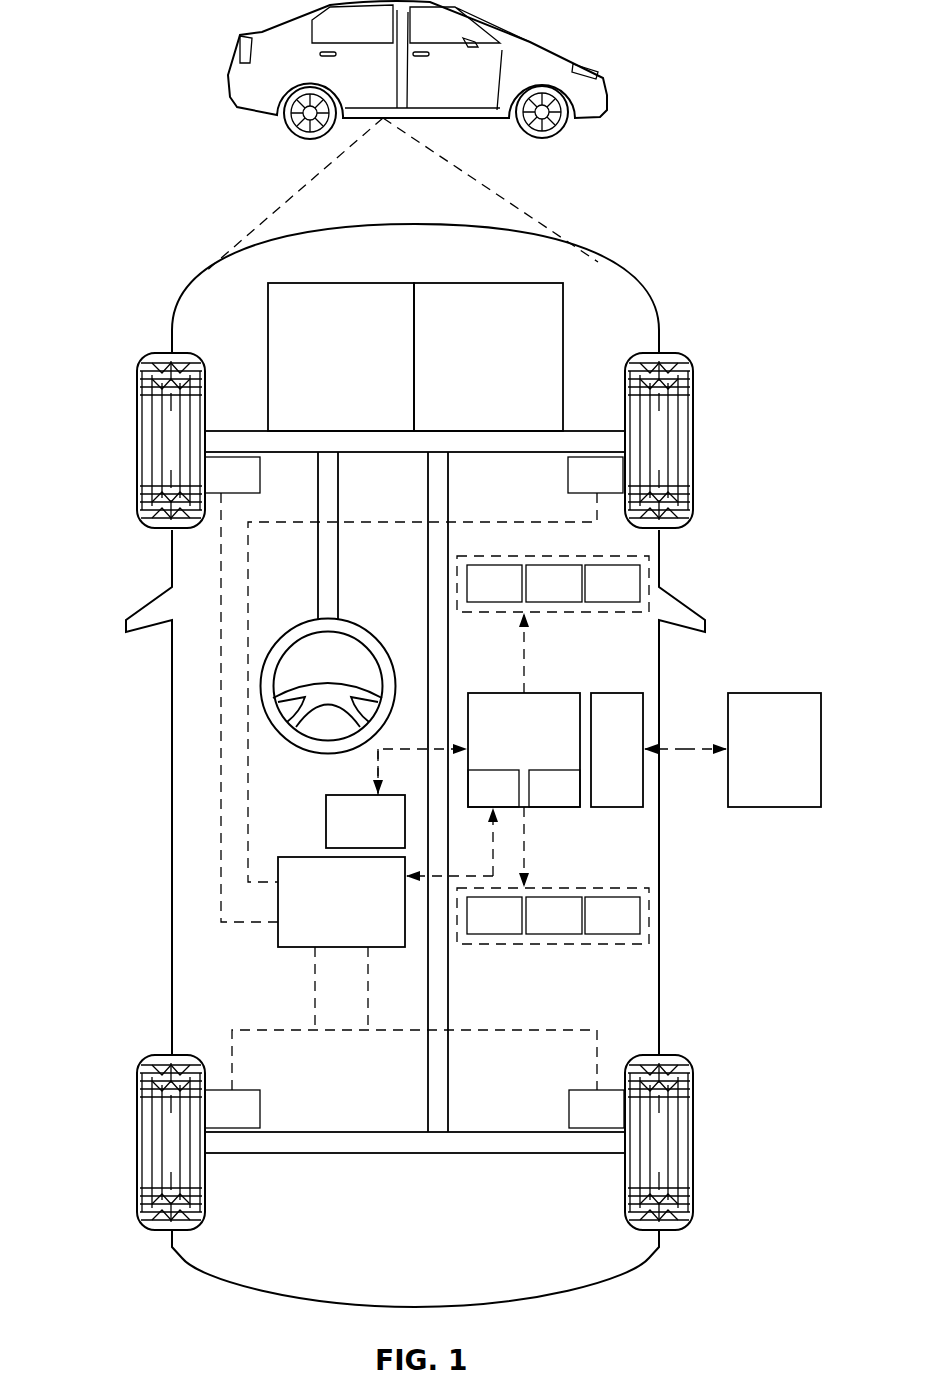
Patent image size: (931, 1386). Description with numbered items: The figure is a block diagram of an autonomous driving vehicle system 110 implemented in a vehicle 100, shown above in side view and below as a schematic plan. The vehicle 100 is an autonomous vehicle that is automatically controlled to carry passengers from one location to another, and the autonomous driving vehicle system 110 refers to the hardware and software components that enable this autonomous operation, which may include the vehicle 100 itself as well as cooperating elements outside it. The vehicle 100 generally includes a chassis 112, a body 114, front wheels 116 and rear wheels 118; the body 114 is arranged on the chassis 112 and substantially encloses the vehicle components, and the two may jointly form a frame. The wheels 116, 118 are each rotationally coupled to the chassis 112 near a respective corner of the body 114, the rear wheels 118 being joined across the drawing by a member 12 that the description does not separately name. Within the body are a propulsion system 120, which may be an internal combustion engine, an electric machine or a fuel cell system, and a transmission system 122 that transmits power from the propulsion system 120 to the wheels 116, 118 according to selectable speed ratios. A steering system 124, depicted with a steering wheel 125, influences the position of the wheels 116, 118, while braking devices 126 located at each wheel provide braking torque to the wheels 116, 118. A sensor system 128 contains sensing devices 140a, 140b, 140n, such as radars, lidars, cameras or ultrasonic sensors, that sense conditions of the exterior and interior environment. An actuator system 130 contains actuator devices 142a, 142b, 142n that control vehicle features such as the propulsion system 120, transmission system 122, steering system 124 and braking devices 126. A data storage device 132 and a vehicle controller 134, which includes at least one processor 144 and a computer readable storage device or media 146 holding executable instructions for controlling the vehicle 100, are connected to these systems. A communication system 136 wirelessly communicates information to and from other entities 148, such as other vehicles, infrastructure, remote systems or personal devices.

The vehicle 100 is at (235, 52).
The autonomous driving vehicle system 110 is at (439, 765).
The chassis 112 is at (428, 1097).
The body 114 is at (172, 853).
The front wheels 116 is at (137, 440).
The rear wheels 118 is at (137, 1140).
The rear axle 12 is at (525, 1152).
The propulsion system 120 is at (361, 372).
The transmission system 122 is at (509, 372).
The steering system 124 is at (347, 487).
The steering wheel 125 is at (312, 753).
The braking devices 126 is at (251, 489).
The sensor system 128 is at (553, 568).
The actuator system 130 is at (553, 935).
The data storage device 132 is at (385, 836).
The vehicle controller 134 is at (544, 747).
The communication system 136 is at (637, 764).
The sensing device 140a is at (518, 598).
The sensing device 140b is at (577, 598).
The sensing device 140n is at (636, 598).
The actuator device 142a is at (518, 930).
The actuator device 142b is at (577, 930).
The actuator device 142n is at (636, 930).
The processor 144 is at (512, 803).
The computer readable storage device or media 146 is at (573, 803).
The other entities 148 is at (794, 764).